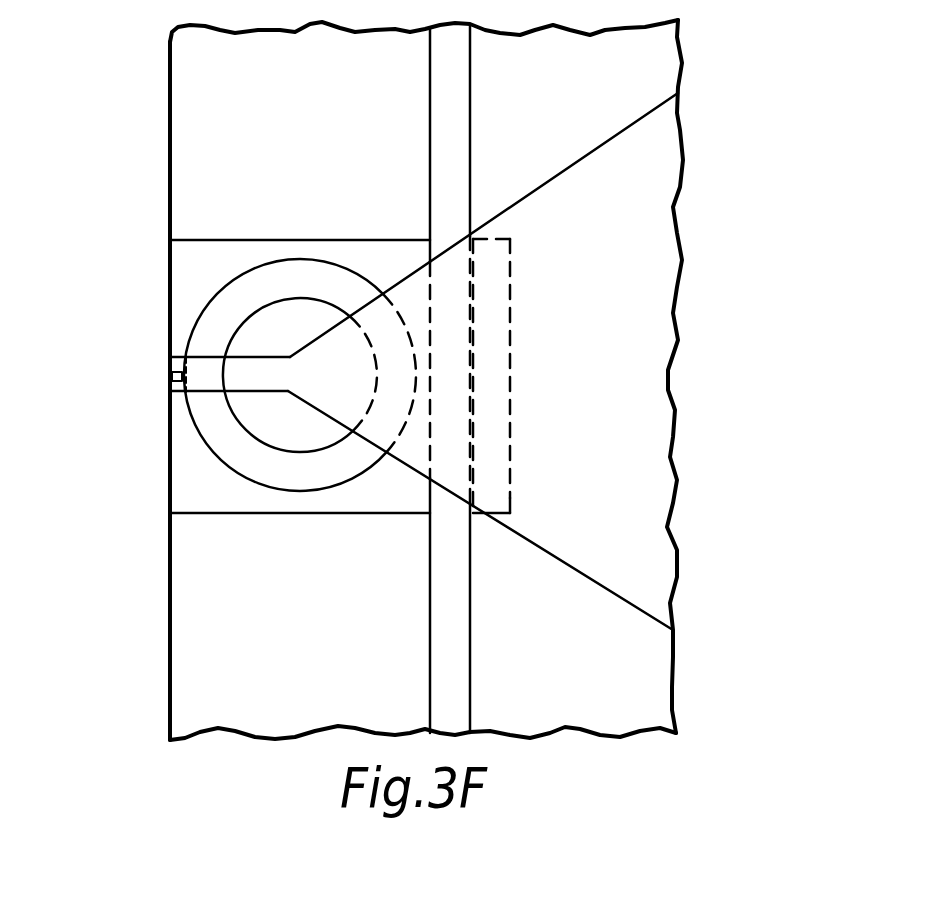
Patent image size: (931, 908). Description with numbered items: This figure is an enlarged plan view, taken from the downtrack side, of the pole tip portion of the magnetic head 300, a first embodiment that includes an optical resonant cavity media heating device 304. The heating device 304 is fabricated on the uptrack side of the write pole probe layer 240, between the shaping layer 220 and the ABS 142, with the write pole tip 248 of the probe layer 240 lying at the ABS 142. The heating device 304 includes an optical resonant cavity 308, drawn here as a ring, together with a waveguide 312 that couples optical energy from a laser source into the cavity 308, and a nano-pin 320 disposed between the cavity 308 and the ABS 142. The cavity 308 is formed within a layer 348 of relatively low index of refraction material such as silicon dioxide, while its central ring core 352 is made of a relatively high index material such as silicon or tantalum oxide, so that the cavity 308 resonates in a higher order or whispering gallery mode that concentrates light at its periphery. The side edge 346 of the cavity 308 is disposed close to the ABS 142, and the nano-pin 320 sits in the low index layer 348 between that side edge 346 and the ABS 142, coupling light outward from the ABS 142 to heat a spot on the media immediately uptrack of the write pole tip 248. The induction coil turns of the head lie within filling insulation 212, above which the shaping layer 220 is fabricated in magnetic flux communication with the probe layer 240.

The magnetic head 300 is at (146, 191).
The ABS 142 is at (170, 247).
The filling insulation 212 is at (315, 154).
The optical resonant cavity media heating device 304 is at (188, 482).
The layer of relatively low index of refraction material 348 is at (182, 293).
The central ring core 352 is at (263, 284).
The optical resonant cavity 308 is at (308, 272).
The nano-pin 320 is at (168, 377).
The write pole tip 248 is at (170, 358).
The side edge of the cavity 346 is at (175, 343).
The waveguide 312 is at (458, 114).
The shaping layer 220 is at (515, 302).
The write pole probe layer 240 is at (628, 406).